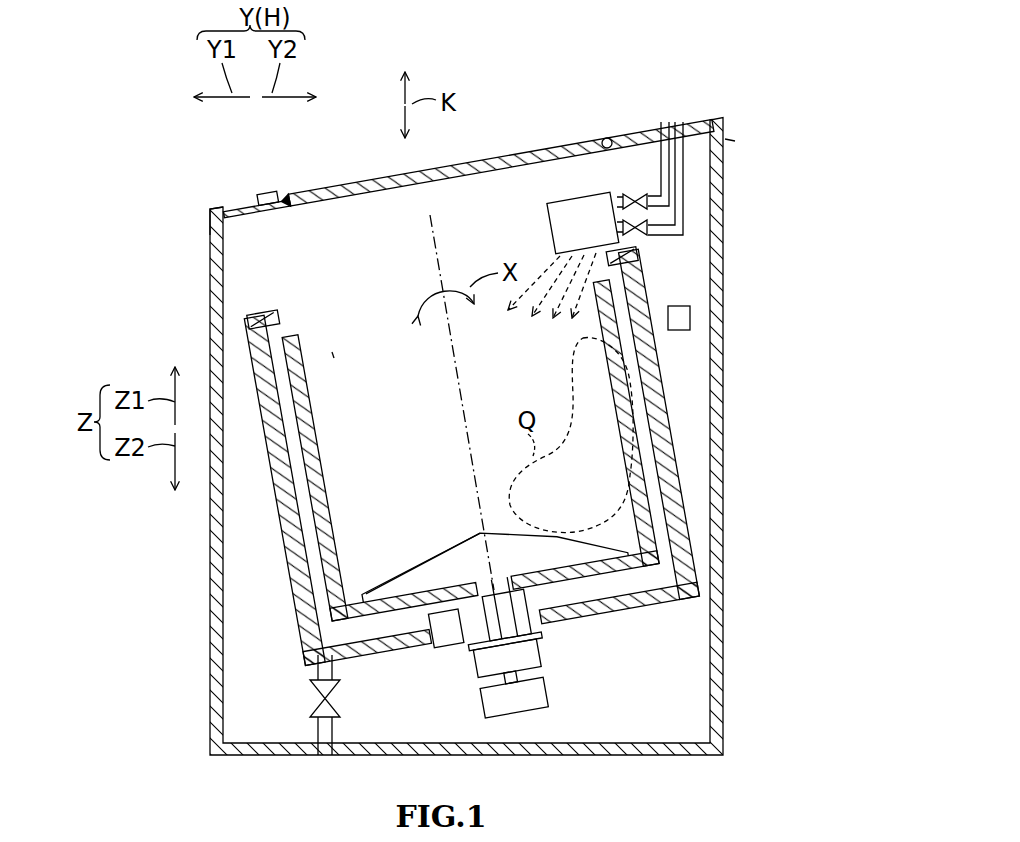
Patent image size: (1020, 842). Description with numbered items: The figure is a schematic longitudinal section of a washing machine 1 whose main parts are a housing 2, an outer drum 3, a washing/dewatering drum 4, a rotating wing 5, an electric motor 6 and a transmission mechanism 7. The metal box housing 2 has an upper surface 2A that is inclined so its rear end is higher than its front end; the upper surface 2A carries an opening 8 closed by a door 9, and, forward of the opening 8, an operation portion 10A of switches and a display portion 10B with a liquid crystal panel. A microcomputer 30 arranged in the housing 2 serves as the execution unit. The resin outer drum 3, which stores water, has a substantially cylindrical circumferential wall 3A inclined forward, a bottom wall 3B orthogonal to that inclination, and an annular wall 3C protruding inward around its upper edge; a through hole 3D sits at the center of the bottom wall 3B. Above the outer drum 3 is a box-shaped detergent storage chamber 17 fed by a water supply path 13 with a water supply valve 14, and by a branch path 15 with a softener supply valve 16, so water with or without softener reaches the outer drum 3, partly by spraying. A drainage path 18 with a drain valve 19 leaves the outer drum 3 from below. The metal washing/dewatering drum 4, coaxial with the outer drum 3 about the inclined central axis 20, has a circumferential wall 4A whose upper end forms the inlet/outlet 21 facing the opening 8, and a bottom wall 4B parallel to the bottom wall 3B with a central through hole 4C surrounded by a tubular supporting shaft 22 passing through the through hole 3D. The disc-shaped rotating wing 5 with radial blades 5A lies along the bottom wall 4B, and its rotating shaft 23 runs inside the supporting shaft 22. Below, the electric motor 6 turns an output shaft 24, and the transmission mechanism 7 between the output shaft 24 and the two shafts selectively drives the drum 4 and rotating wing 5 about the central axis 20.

The washing machine 1 is at (737, 141).
The housing 2 is at (481, 437).
The upper surface 2A is at (216, 211).
The outer drum 3 is at (404, 468).
The circumferential wall 3A is at (297, 570).
The bottom wall 3B is at (660, 606).
The annular wall 3C is at (265, 312).
The through hole 3D is at (523, 598).
The washing/dewatering drum 4 is at (550, 478).
The circumferential wall 4A is at (676, 503).
The bottom wall 4B is at (368, 628).
The through hole 4C is at (490, 582).
The rotating wing 5 is at (487, 528).
The blades 5A is at (395, 585).
The electric motor 6 is at (547, 701).
The transmission mechanism 7 is at (545, 646).
The opening 8 is at (289, 200).
The door 9 is at (440, 123).
The operation portion 10A is at (268, 193).
The display portion 10B is at (250, 204).
The water supply path 13 is at (667, 206).
The water supply valve 14 is at (640, 237).
The branch path 15 is at (640, 220).
The softener supply valve 16 is at (632, 200).
The detergent storage chamber 17 is at (578, 213).
The drainage path 18 is at (316, 731).
The drain valve 19 is at (314, 698).
The central axis 20 is at (448, 351).
The inlet/outlet 21 is at (334, 355).
The supporting shaft 22 is at (428, 611).
The rotating shaft 23 is at (473, 643).
The output shaft 24 is at (537, 670).
The microcomputer 30 is at (690, 318).